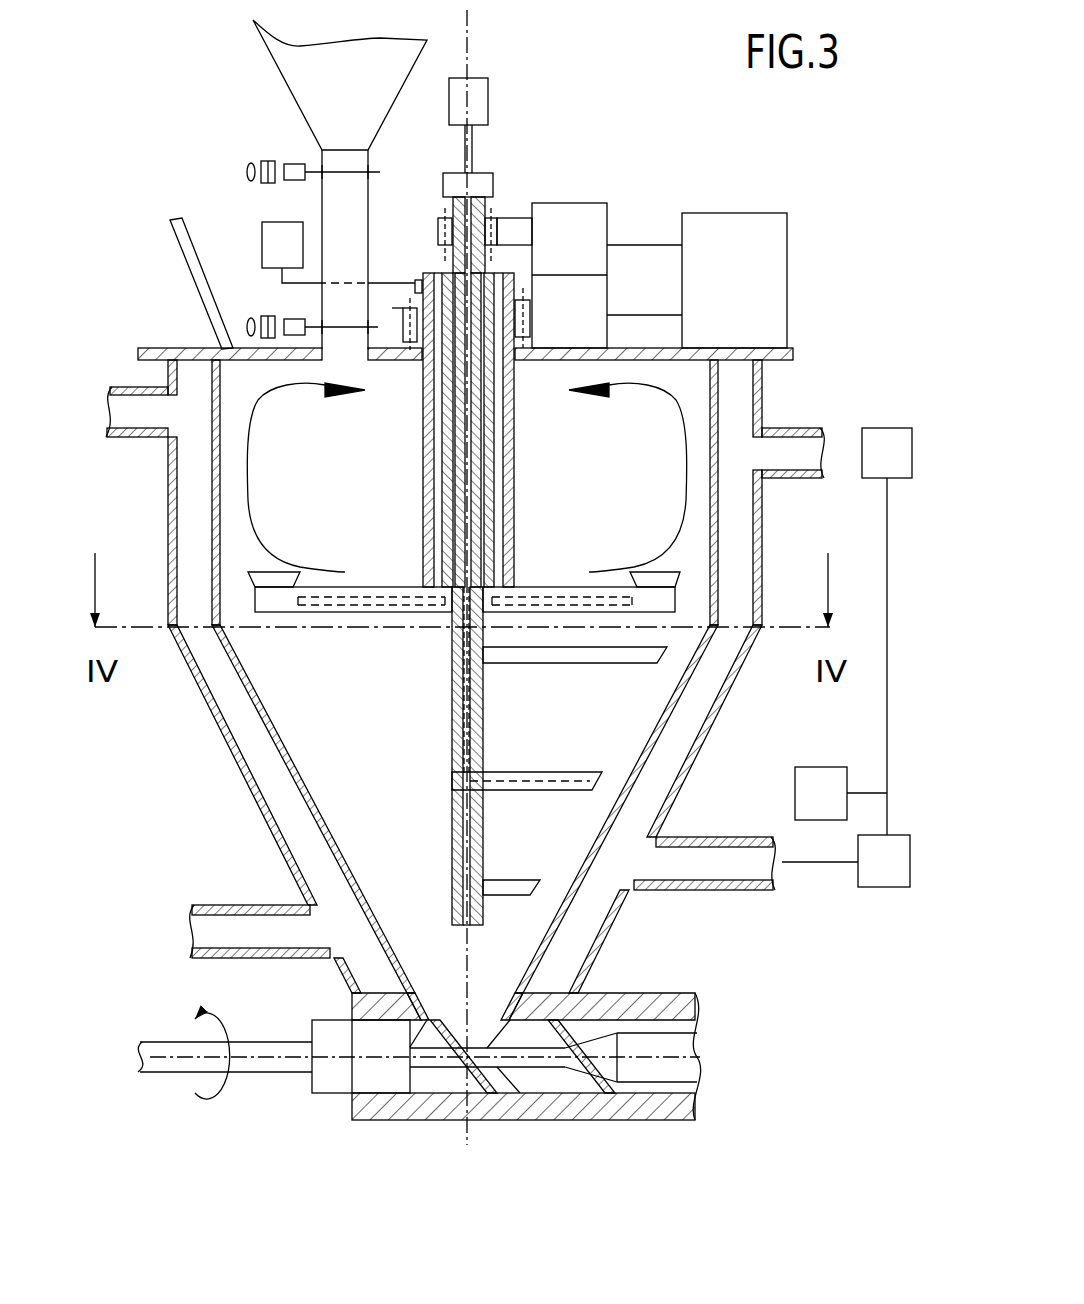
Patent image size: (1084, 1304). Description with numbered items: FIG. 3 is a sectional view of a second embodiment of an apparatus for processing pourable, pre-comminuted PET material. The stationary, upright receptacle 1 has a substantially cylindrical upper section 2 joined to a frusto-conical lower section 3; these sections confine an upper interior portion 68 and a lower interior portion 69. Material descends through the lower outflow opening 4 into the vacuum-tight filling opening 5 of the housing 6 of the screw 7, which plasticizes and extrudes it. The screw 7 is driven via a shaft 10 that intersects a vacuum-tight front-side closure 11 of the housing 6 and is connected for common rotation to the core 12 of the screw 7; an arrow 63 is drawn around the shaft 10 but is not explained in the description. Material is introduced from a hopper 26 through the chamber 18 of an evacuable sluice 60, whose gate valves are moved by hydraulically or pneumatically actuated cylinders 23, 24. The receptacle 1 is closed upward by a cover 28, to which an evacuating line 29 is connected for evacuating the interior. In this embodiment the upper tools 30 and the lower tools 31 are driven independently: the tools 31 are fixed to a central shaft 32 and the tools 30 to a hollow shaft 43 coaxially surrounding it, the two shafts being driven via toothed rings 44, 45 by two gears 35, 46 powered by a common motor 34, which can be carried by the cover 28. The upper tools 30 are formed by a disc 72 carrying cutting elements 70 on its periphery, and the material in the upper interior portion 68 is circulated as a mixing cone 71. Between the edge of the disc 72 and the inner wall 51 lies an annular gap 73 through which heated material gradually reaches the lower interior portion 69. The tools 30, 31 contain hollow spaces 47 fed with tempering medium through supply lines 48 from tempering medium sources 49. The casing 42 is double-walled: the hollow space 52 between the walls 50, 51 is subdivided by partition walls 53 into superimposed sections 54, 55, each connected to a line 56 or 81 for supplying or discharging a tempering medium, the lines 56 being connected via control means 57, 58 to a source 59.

The receptacle 1 is at (224, 755).
The cylindrical upper section 2 is at (766, 411).
The frusto-conical lower section 3 is at (622, 922).
The lower outflow opening 4 is at (487, 987).
The vacuum-tight filling opening 5 is at (478, 1008).
The housing 6 is at (456, 1121).
The screw 7 is at (536, 1073).
The shaft 10 is at (268, 1065).
The vacuum-tight front-side closure 11 is at (332, 1072).
The core 12 is at (680, 1050).
The chamber 18 is at (347, 230).
The cylinder 23 is at (278, 160).
The cylinder 24 is at (277, 336).
The hopper 26 is at (360, 84).
The cover 28 is at (752, 355).
The evacuating line 29 is at (215, 313).
The tools 30 is at (329, 580).
The tools 31 is at (512, 652).
The central shaft 32 is at (452, 657).
The motor 34 is at (747, 282).
The gear 35 is at (597, 332).
The casing 42 is at (201, 713).
The hollow shaft 43 is at (512, 432).
The toothed ring 44 is at (492, 217).
The toothed ring 45 is at (410, 305).
The gear 46 is at (573, 237).
The hollow spaces 47 is at (373, 600).
The supply lines 48 is at (433, 420).
The tempering medium sources 49 is at (273, 250).
The wall 50 is at (710, 487).
The inner wall 51 is at (252, 790).
The hollow space 52 is at (737, 513).
The partition walls 53 is at (250, 733).
The section 54 is at (197, 515).
The section 55 is at (315, 847).
The line 56 is at (792, 448).
The control means 57 is at (901, 467).
The control means 58 is at (896, 876).
The source 59 is at (834, 809).
The evacuable sluice 60 is at (378, 163).
The direction of rotation 63 is at (173, 1055).
The upper interior portion 68 is at (374, 481).
The lower interior portion 69 is at (422, 859).
The cutting edges 70 is at (268, 578).
The mixing cone 71 is at (248, 433).
The disc 72 is at (532, 585).
The annular gap 73 is at (243, 605).
The line 81 is at (147, 387).